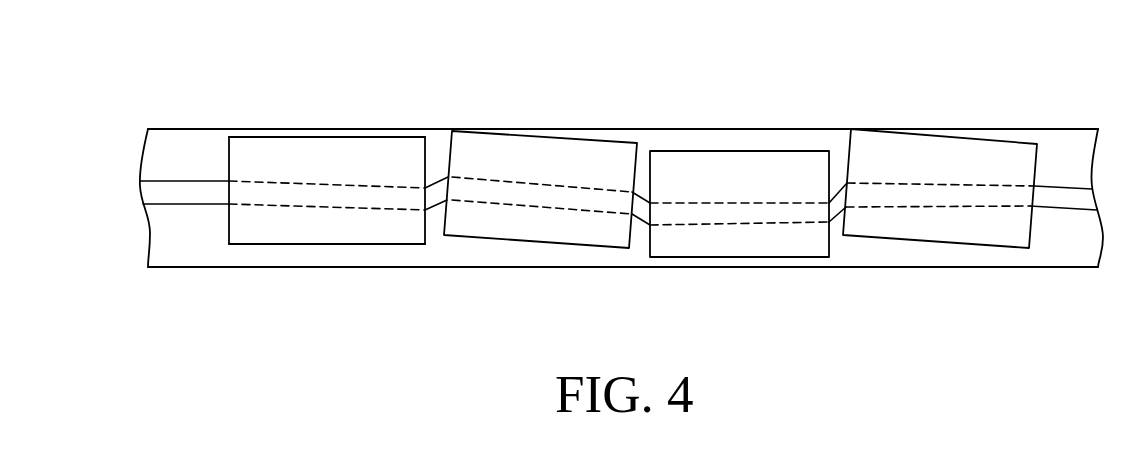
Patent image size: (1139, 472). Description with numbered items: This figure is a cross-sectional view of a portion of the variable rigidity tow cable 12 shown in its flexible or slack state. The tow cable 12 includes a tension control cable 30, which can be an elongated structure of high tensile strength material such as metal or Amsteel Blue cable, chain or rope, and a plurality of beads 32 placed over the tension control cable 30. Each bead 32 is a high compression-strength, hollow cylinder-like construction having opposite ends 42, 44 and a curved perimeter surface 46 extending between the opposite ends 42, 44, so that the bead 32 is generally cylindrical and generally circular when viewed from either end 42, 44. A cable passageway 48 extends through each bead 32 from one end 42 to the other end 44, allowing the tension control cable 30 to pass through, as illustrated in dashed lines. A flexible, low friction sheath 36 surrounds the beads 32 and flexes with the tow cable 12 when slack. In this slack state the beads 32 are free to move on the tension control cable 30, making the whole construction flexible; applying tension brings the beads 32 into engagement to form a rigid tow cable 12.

The tow cable 12 is at (591, 64).
The tension control cable 30 is at (1053, 197).
The beads 32 is at (326, 155).
The sheath 36 is at (330, 267).
The end 42 is at (427, 163).
The end 44 is at (229, 153).
The curved perimeter surface 46 is at (385, 244).
The cable passageway 48 is at (259, 204).